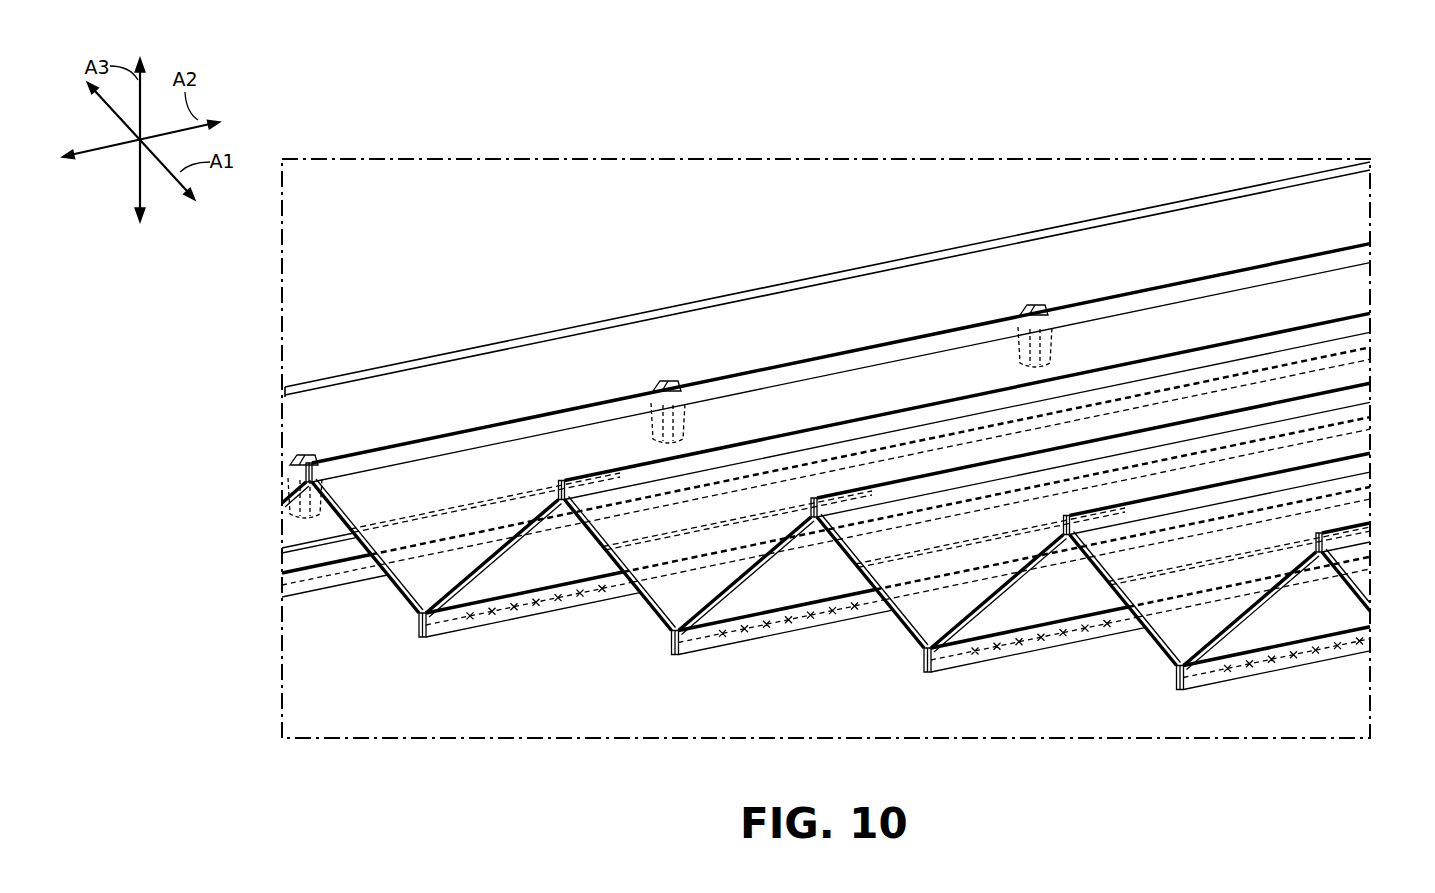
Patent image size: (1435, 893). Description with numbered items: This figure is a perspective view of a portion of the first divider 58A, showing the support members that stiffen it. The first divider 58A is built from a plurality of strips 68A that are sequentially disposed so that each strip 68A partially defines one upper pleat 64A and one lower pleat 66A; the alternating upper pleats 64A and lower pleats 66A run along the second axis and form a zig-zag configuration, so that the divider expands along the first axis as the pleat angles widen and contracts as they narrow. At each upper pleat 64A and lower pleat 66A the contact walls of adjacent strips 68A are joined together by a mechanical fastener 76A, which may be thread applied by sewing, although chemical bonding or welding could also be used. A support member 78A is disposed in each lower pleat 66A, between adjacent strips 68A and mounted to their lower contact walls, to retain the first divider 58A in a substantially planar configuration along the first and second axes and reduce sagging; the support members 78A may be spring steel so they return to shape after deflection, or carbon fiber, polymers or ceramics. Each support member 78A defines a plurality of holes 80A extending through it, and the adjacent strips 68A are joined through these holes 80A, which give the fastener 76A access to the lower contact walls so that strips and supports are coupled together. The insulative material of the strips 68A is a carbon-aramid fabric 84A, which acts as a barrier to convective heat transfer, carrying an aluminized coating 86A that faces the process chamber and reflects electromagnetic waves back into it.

The first divider 58A is at (1232, 230).
The upper pleat 64A is at (1368, 222).
The lower pleat 66A is at (370, 587).
The strip 68A is at (615, 590).
The mechanical fastener 76A is at (500, 627).
The support member 78A is at (470, 560).
The hole 80A is at (513, 642).
The carbon-aramid fabric 84A is at (486, 557).
The aluminized coating 86A is at (325, 530).